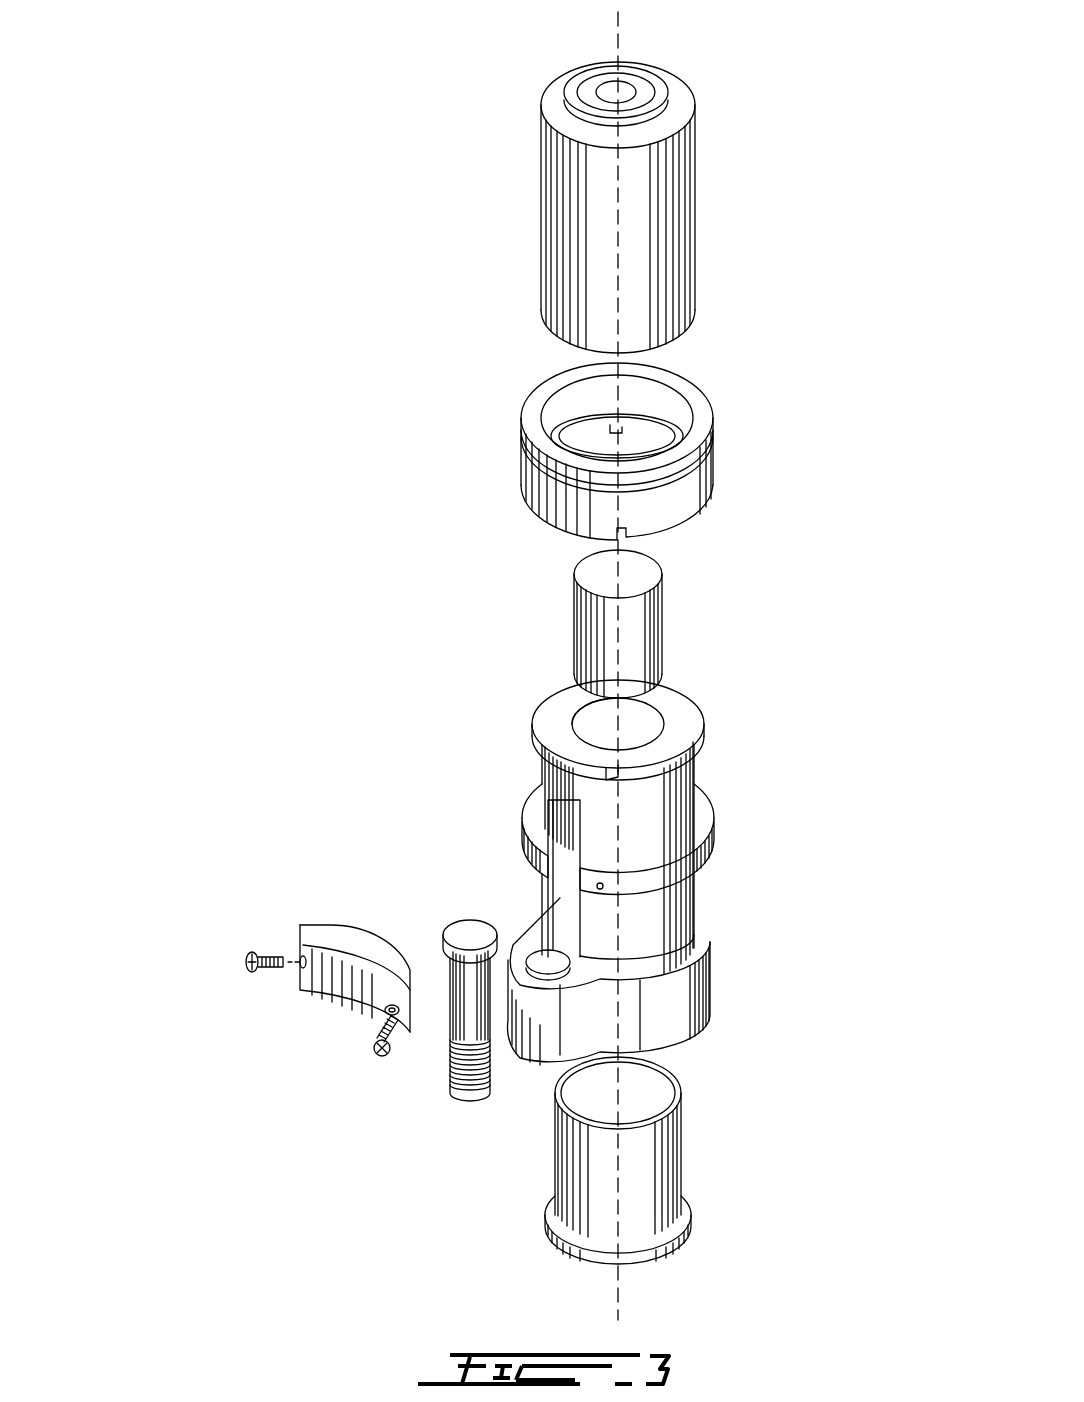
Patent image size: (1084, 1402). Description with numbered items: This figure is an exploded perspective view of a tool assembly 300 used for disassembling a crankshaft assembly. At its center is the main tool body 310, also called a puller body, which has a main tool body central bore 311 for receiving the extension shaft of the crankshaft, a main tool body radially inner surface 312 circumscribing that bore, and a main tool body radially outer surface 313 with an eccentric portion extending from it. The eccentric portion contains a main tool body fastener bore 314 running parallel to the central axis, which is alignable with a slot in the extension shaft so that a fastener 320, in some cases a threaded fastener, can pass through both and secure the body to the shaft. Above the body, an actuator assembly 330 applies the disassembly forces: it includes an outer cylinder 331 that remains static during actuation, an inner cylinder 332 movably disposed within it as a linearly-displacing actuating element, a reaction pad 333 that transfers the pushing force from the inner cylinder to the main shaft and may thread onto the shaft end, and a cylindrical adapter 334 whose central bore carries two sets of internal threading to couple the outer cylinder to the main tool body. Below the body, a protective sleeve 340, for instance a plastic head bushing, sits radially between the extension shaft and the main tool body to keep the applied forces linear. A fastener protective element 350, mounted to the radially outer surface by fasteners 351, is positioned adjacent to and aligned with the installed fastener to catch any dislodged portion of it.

The tool assembly 300 is at (260, 410).
The main tool body 310 is at (714, 822).
The main tool body central bore 311 is at (593, 724).
The main tool body radially inner surface 312 is at (648, 722).
The main tool body radially outer surface 313 is at (692, 920).
The main tool body fastener bore 314 is at (560, 965).
The fastener 320 is at (470, 935).
The actuator assembly 330 is at (470, 317).
The outer cylinder 331 is at (696, 205).
The inner cylinder 332 is at (648, 98).
The reaction pad 333 is at (663, 625).
The cylindrical adapter 334 is at (714, 462).
The protective sleeve 340 is at (685, 1150).
The fastener protective element 350 is at (345, 995).
The fasteners 351 is at (240, 962).